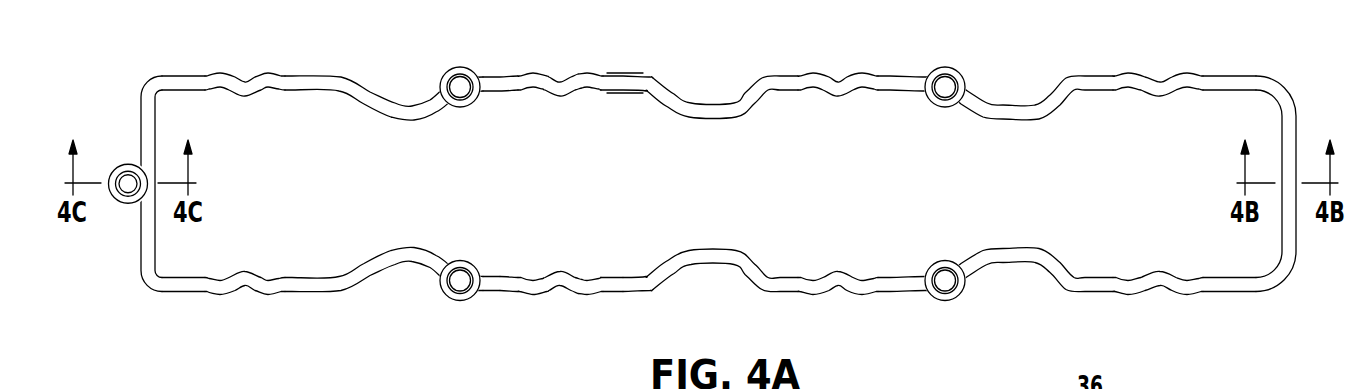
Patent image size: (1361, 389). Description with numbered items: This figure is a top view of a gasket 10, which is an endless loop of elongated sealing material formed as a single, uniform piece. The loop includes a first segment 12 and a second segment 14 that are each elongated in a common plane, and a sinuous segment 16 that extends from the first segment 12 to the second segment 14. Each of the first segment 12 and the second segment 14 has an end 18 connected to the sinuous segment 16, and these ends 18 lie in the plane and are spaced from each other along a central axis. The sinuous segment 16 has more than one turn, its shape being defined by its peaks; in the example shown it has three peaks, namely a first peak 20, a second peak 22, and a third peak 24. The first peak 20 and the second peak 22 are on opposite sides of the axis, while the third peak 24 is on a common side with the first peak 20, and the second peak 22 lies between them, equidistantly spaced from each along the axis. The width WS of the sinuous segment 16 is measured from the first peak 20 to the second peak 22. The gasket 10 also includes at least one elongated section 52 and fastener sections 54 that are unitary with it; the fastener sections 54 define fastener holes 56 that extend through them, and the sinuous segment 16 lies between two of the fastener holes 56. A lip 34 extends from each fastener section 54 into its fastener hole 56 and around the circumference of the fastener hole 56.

The gasket 10 is at (1038, 53).
The first segment 12 is at (490, 278).
The second segment 14 is at (630, 278).
The sinuous segment 16 is at (245, 71).
The end 18 is at (510, 288).
The first peak 20 is at (537, 297).
The second peak 22 is at (560, 277).
The third peak 24 is at (589, 299).
The lip 34 is at (130, 204).
The elongated section 52 is at (922, 48).
The fastener section 54 is at (460, 79).
The fastener hole 56 is at (457, 92).
The width of the sinuous segment WS is at (633, 43).